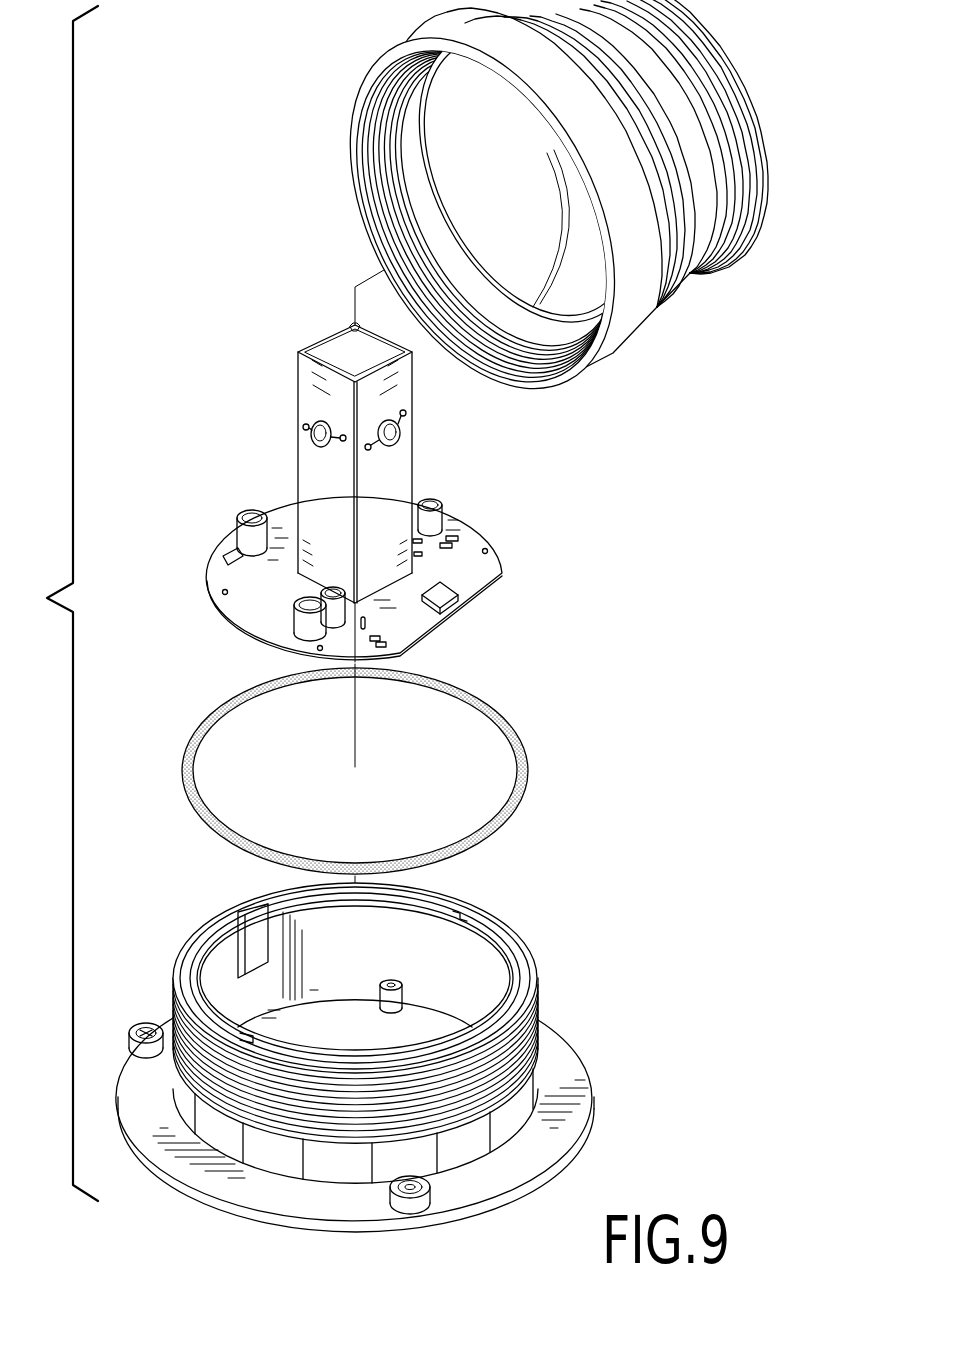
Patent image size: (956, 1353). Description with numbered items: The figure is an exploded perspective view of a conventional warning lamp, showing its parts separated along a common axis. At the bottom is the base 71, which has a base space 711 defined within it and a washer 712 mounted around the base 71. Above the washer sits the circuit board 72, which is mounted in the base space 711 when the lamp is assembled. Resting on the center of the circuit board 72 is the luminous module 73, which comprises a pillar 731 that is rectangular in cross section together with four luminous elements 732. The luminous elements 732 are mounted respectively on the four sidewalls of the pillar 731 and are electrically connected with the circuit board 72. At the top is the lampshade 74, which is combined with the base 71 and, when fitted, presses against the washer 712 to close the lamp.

The base 71 is at (406, 1057).
The base space 711 is at (372, 1041).
The washer 712 is at (516, 796).
The circuit board 72 is at (495, 577).
The luminous module 73 is at (369, 463).
The pillar 731 is at (402, 398).
The luminous elements 732 is at (318, 437).
The lampshade 74 is at (700, 273).